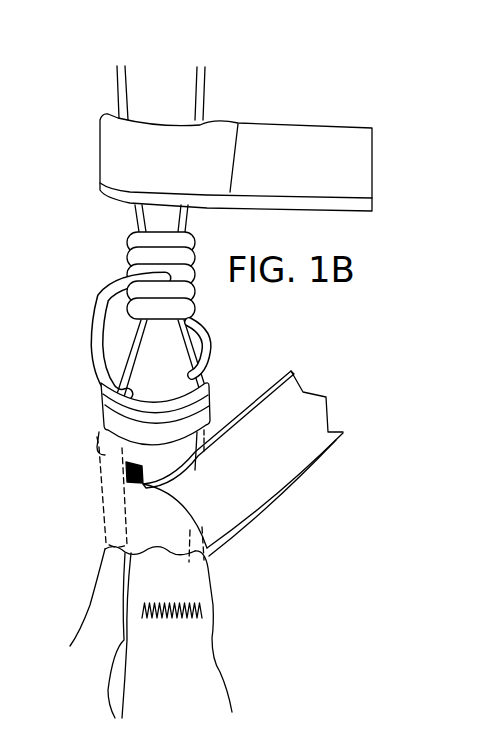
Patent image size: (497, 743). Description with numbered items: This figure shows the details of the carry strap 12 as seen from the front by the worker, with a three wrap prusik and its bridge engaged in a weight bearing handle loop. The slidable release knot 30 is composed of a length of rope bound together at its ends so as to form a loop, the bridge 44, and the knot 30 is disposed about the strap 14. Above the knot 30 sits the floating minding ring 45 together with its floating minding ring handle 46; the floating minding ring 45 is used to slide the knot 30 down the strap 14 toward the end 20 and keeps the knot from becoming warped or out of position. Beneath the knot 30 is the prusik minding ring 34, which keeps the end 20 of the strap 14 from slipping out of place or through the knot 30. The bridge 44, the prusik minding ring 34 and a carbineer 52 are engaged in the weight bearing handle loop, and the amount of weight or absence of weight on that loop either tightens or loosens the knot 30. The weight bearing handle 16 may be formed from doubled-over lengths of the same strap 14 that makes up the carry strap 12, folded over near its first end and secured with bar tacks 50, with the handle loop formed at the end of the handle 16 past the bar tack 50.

The carry strap 12 is at (258, 88).
The strap 14 is at (177, 94).
The weight bearing handle 16 is at (185, 693).
The end of the strap 20 is at (278, 478).
The slidable knot 30 is at (127, 258).
The prusik minding ring 34 is at (208, 426).
The bridge 44 is at (93, 333).
The floating minding ring 45 is at (143, 170).
The floating minding ring handle 46 is at (284, 170).
The bar tacks 50 is at (187, 604).
The carbineer 52 is at (110, 502).